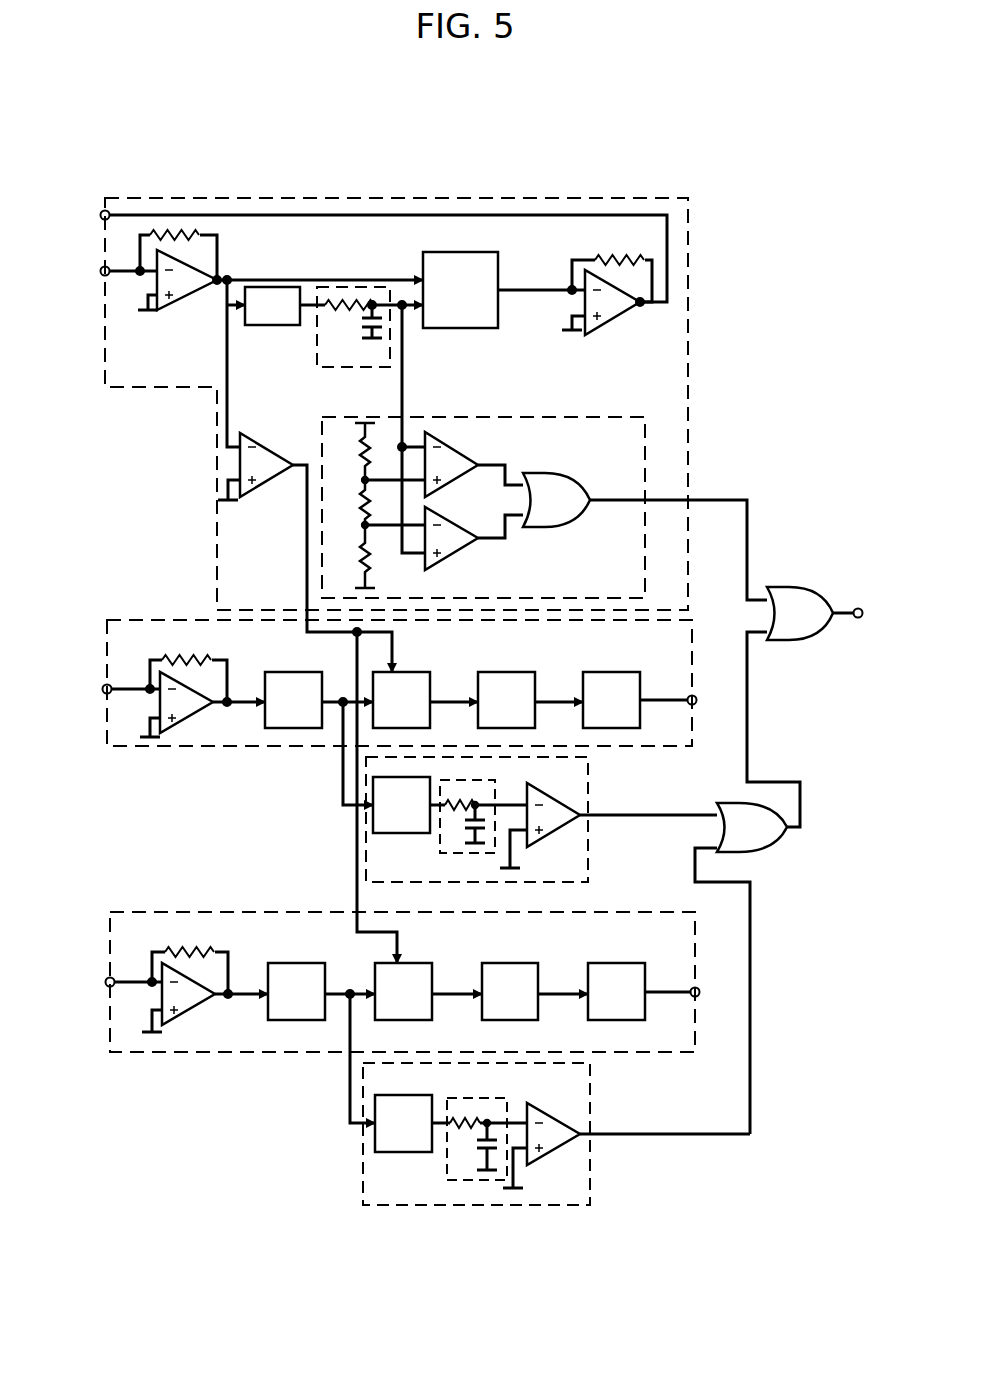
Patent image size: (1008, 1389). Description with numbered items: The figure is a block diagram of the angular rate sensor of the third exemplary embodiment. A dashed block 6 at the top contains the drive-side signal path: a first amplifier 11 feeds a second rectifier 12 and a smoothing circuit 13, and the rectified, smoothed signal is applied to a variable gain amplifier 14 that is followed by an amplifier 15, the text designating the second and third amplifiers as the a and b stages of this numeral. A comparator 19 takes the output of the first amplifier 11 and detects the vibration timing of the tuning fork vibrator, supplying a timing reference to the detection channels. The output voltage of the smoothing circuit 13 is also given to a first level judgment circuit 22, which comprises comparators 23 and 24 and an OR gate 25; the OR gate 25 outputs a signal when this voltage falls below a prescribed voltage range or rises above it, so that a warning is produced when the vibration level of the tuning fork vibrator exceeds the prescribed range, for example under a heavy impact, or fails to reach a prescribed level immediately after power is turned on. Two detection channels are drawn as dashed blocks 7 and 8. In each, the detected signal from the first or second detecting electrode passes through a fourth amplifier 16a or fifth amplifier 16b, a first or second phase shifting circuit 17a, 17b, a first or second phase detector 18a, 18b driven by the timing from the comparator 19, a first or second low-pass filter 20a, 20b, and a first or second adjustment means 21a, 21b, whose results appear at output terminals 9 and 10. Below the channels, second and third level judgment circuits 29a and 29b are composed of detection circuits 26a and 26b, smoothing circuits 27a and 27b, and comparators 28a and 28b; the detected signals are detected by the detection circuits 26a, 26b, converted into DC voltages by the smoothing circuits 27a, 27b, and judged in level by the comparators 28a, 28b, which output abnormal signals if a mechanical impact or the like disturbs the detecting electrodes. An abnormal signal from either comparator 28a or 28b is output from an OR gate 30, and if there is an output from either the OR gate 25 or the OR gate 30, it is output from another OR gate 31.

The reference signal processing circuit 6 is at (532, 198).
The first channel detection circuit 7 is at (148, 620).
The second channel detection circuit 8 is at (160, 912).
The first output terminal 9 is at (697, 699).
The second output terminal 10 is at (700, 993).
The first amplifier 11 is at (172, 305).
The second rectifier 12 is at (280, 325).
The smoothing circuit 13 is at (348, 287).
The variable gain amplifier 14 is at (446, 252).
The second amplifier 15 is at (612, 250).
The fourth amplifier 16a is at (185, 723).
The fifth amplifier 16b is at (185, 1017).
The first phase shifting circuit 17a is at (283, 730).
The second phase shifting circuit 17b is at (285, 1021).
The first phase detector 18a is at (430, 680).
The second phase detector 18b is at (433, 970).
The comparator 19 is at (255, 490).
The first low-pass filter 20a is at (538, 680).
The second low-pass filter 20b is at (540, 970).
The first adjustment means 21a is at (600, 730).
The second adjustment means 21b is at (612, 1021).
The first level judgment circuit 22 is at (508, 415).
The comparator 23 is at (442, 438).
The comparator 24 is at (462, 543).
The OR gate 25 is at (552, 527).
The detection circuit 26a is at (372, 830).
The detection circuit 26b is at (402, 1153).
The smoothing circuit 27a is at (440, 833).
The smoothing circuit 27b is at (473, 1182).
The comparator 28a is at (562, 822).
The comparator 28b is at (557, 1147).
The second level judgment circuit 29a is at (590, 856).
The third level judgment circuit 29b is at (592, 1167).
The OR gate 30 is at (770, 852).
The OR gate 31 is at (806, 587).